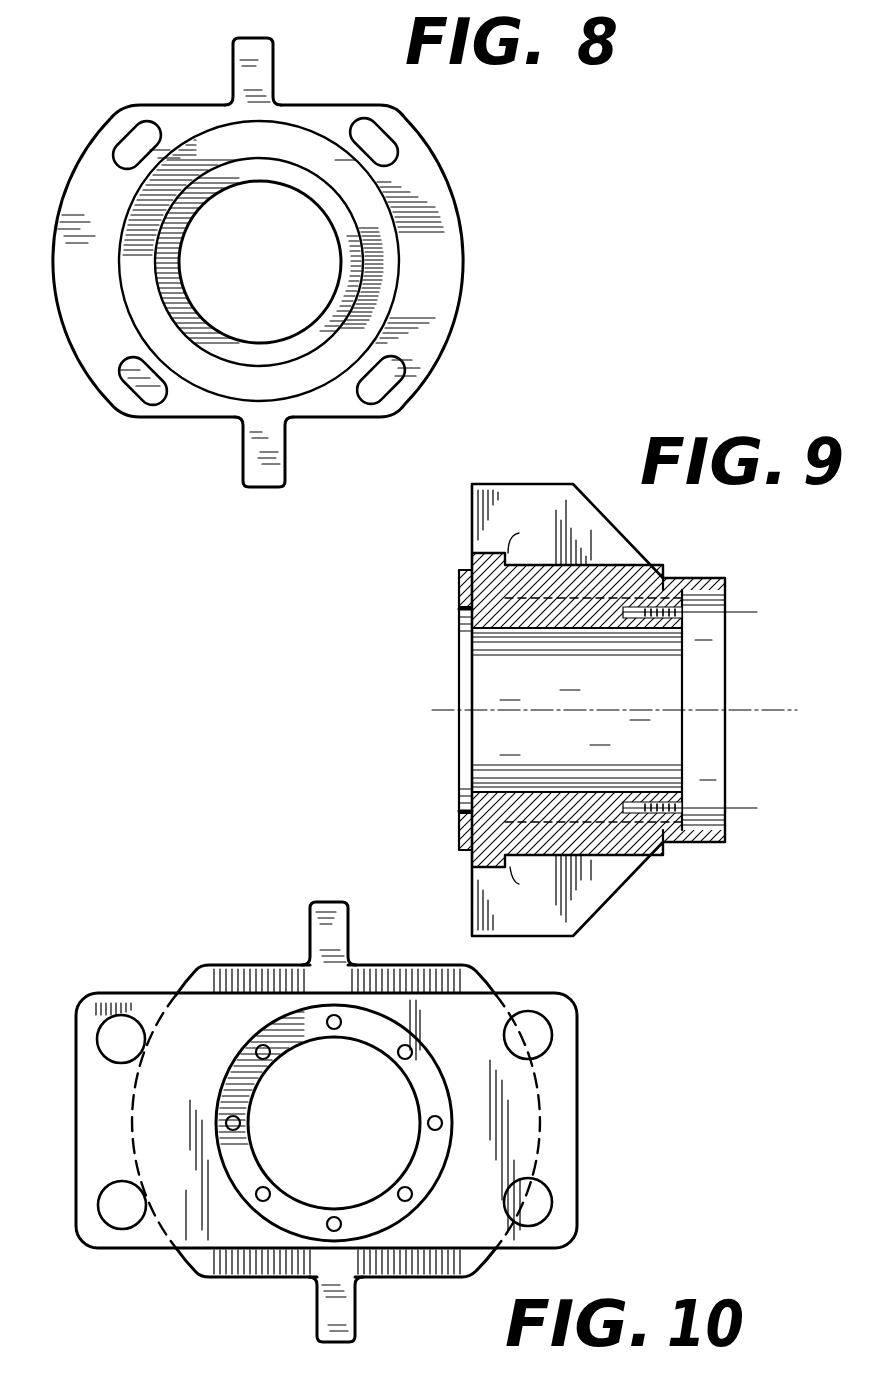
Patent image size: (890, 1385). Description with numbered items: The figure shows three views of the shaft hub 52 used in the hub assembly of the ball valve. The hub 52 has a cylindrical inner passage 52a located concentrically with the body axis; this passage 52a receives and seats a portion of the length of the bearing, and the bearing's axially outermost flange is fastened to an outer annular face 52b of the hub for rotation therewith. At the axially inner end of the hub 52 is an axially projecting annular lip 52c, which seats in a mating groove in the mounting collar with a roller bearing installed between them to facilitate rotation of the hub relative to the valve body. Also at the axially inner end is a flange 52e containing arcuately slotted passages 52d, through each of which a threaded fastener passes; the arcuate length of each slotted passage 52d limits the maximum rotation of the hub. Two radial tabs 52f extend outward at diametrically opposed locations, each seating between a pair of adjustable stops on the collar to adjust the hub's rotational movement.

In FIG. 9, the shaft hub 52 is at (665, 846).
In FIG. 10, the shaft hub 52 is at (183, 1272).
In FIG. 9, the cylindrical inner passage 52a is at (517, 792).
In FIG. 9, the outer annular face 52b is at (700, 583).
In FIG. 9, the annular lip 52c is at (476, 826).
In FIG. 8, the arcuately slotted passage 52d is at (377, 143).
In FIG. 8, the flange 52e is at (430, 280).
In FIG. 8, the radial tab 52f is at (268, 460).
In FIG. 9, the radial tab 52f is at (618, 880).